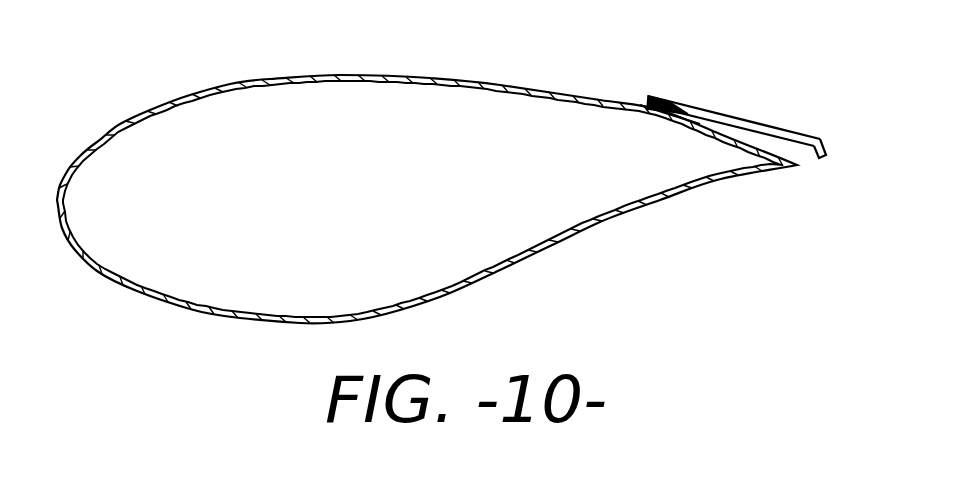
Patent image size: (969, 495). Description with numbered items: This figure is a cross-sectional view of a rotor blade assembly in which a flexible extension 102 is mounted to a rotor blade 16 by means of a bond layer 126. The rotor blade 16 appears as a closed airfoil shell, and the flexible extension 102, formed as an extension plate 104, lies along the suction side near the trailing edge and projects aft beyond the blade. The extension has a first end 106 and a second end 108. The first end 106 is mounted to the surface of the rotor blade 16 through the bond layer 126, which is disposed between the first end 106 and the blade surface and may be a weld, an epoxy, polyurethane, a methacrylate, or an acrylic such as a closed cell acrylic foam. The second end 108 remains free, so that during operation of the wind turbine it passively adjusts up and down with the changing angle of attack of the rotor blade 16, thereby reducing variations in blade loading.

The rotor blade 16 is at (229, 71).
The flexible extension 102 is at (738, 94).
The extension plate 104 is at (718, 112).
The first end 106 is at (667, 95).
The second end 108 is at (798, 131).
The bond layer 126 is at (665, 119).